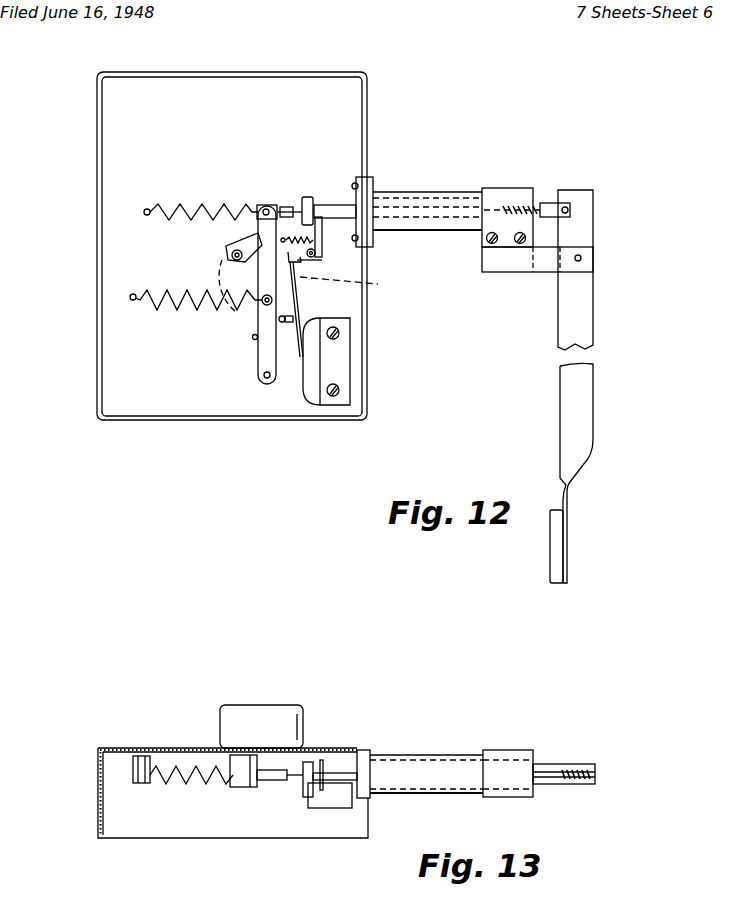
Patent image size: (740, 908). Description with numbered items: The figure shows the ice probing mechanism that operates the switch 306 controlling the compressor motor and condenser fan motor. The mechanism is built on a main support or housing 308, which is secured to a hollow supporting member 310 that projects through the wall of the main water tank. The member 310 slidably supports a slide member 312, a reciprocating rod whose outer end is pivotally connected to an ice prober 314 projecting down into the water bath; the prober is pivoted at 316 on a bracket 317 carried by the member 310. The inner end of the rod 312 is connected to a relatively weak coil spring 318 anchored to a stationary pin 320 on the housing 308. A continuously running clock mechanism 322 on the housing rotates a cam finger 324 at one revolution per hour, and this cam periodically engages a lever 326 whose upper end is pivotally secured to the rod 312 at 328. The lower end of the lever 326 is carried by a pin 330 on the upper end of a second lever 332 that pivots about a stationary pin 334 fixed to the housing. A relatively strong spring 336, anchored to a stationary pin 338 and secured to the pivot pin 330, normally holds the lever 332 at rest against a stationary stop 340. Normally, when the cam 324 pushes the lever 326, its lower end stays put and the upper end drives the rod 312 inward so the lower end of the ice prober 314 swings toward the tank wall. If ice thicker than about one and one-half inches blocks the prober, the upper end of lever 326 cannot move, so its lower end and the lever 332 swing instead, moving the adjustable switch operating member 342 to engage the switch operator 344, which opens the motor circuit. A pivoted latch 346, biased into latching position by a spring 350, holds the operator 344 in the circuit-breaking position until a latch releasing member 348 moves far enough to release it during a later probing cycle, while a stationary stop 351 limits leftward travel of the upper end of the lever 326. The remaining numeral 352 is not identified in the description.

In FIG. 12, the switch 306 is at (338, 360).
In FIG. 13, the switch 306 is at (335, 803).
In FIG. 12, the housing 308 is at (195, 92).
In FIG. 12, the hollow supporting member 310 is at (430, 195).
In FIG. 13, the hollow supporting member 310 is at (440, 760).
In FIG. 12, the slide member 312 is at (358, 178).
In FIG. 13, the slide member 312 is at (340, 777).
In FIG. 12, the ice prober 314 is at (585, 229).
In FIG. 13, the ice prober 314 is at (596, 775).
In FIG. 12, the pivot 316 is at (577, 261).
In FIG. 12, the bracket 317 is at (492, 262).
In FIG. 13, the bracket 317 is at (515, 762).
In FIG. 12, the coil spring 318 is at (170, 204).
In FIG. 13, the coil spring 318 is at (180, 785).
In FIG. 12, the stationary pin 320 is at (144, 212).
In FIG. 13, the stationary pin 320 is at (133, 775).
In FIG. 12, the clock mechanism 322 is at (380, 286).
In FIG. 13, the clock mechanism 322 is at (232, 715).
In FIG. 12, the cam finger 324 is at (230, 252).
In FIG. 13, the cam finger 324 is at (236, 760).
In FIG. 12, the lever 326 is at (262, 270).
In FIG. 13, the lever 326 is at (263, 790).
In FIG. 12, the pivotal connection 328 is at (262, 205).
In FIG. 12, the pin 330 is at (262, 304).
In FIG. 12, the lever 332 is at (262, 357).
In FIG. 12, the stationary pin 334 is at (264, 386).
In FIG. 12, the spring 336 is at (152, 306).
In FIG. 12, the stationary pin 338 is at (130, 298).
In FIG. 13, the stationary pin 338 is at (133, 760).
In FIG. 12, the stationary stop 340 is at (253, 341).
In FIG. 12, the adjustable switch operating member 342 is at (294, 314).
In FIG. 12, the switch operator 344 is at (291, 306).
In FIG. 12, the pivoted latch 346 is at (322, 250).
In FIG. 12, the latch releasing member 348 is at (306, 197).
In FIG. 13, the latch releasing member 348 is at (308, 765).
In FIG. 12, the spring 350 is at (292, 226).
In FIG. 12, the stationary stop 351 is at (316, 239).
In FIG. 12, the arc 352 is at (256, 223).